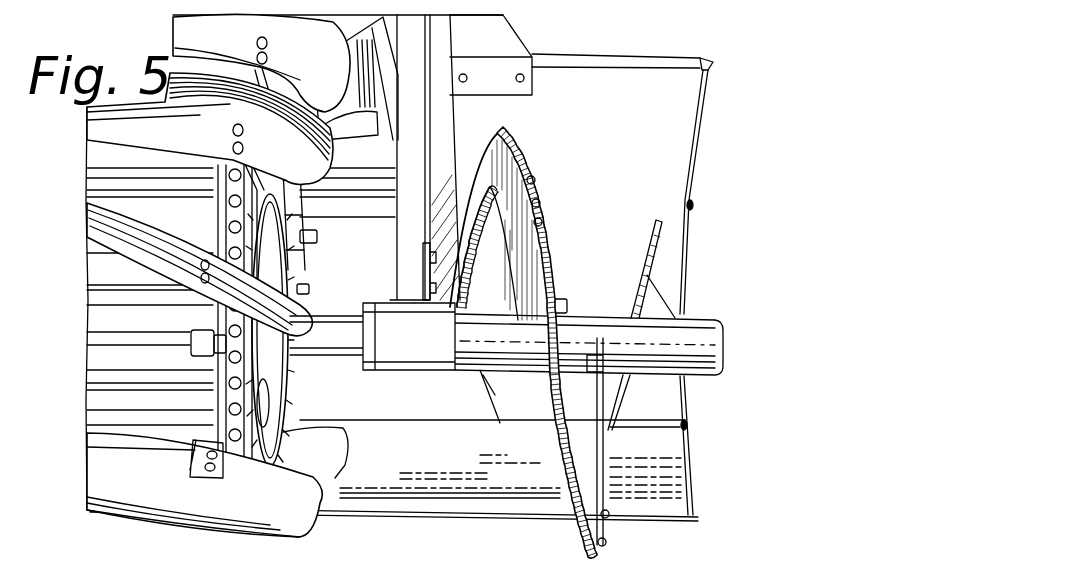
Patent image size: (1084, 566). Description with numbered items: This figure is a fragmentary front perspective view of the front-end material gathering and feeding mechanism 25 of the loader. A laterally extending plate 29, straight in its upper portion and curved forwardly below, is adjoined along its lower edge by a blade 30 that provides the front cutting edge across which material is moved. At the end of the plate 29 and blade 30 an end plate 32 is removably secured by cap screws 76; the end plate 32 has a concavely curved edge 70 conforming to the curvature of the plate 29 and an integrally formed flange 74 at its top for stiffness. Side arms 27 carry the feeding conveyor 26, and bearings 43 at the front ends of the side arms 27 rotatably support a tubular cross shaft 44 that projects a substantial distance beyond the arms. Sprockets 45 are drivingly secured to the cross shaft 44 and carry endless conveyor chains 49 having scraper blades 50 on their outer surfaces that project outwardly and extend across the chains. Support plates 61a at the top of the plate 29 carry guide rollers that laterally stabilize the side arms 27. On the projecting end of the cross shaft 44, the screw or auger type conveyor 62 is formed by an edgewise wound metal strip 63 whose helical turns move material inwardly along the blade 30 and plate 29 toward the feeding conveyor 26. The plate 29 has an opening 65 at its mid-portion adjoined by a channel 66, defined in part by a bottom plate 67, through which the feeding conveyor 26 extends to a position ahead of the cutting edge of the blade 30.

The material gathering and feeding mechanism 25 is at (86, 138).
The feeding conveyor 26 is at (117, 517).
The side arms 27 is at (413, 117).
The plate 29 is at (660, 68).
The blade 30 is at (678, 485).
The end plates 32 is at (703, 130).
The bearings 43 is at (391, 372).
The cross shaft 44 is at (340, 352).
The sprockets 45 is at (278, 402).
The endless conveyor chains 49 is at (298, 248).
The scraper blades 50 is at (313, 155).
The support plates 61a is at (503, 37).
The screw or auger type conveyors 62 is at (545, 258).
The edgewise wound metal strip 63 is at (566, 474).
The opening 65 is at (452, 137).
The channel 66 is at (367, 263).
The bottom plate 67 is at (450, 403).
The concavely curved edge 70 is at (683, 395).
The flange 74 is at (712, 72).
The cap screws 76 is at (693, 207).